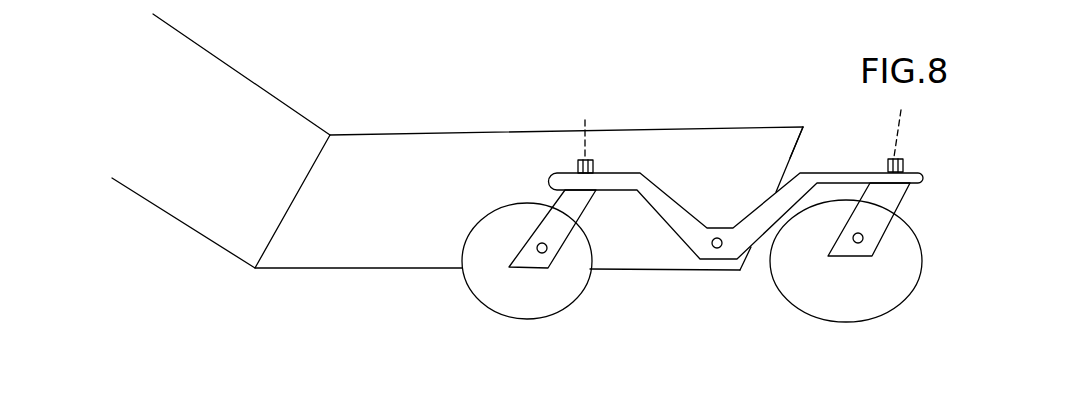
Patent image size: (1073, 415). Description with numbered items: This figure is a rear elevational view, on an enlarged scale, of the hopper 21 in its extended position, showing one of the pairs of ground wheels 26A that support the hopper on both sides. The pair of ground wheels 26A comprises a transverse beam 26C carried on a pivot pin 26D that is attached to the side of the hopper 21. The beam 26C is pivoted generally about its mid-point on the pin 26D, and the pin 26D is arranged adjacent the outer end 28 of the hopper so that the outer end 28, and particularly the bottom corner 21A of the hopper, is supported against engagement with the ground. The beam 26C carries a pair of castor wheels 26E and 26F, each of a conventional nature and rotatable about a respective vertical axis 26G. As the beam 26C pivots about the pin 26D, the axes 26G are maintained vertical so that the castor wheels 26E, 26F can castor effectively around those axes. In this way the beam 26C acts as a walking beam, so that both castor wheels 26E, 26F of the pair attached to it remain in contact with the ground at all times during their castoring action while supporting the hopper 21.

The hopper 21 is at (402, 153).
The bottom corner 21A is at (742, 272).
The pair of ground wheels 26A is at (917, 155).
The transverse beam 26C is at (662, 207).
The pivot pin 26D is at (717, 238).
The castor wheel 26E is at (562, 210).
The castor wheel 26F is at (893, 207).
The vertical axis 26G is at (585, 118).
The outer end 28 is at (799, 152).